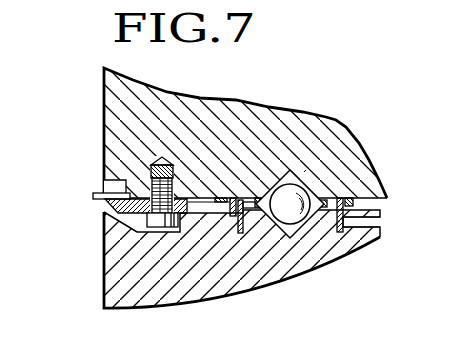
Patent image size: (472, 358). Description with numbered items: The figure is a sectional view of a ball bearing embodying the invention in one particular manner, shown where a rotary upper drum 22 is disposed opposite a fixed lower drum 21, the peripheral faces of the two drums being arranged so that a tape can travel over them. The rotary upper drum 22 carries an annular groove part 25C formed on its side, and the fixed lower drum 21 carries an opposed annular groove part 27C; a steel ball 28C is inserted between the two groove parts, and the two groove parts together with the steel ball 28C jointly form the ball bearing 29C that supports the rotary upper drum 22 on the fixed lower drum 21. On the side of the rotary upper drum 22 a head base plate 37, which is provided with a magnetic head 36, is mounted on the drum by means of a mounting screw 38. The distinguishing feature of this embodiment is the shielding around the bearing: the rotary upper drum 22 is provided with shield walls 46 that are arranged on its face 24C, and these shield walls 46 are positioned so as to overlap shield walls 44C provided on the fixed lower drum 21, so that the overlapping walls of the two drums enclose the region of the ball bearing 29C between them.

The fixed lower drum 21 is at (132, 275).
The rotary upper drum 22 is at (125, 112).
The face of the rotary upper drum 24C is at (203, 197).
The annular groove part 25C is at (293, 183).
The annular groove part 27C is at (294, 240).
The steel ball 28C is at (304, 172).
The ball bearing 29C is at (357, 224).
The magnetic head 36 is at (97, 190).
The head base plate 37 is at (107, 206).
The mounting screw 38 is at (163, 228).
The shield wall 44C is at (240, 234).
The shield wall 46 is at (230, 197).